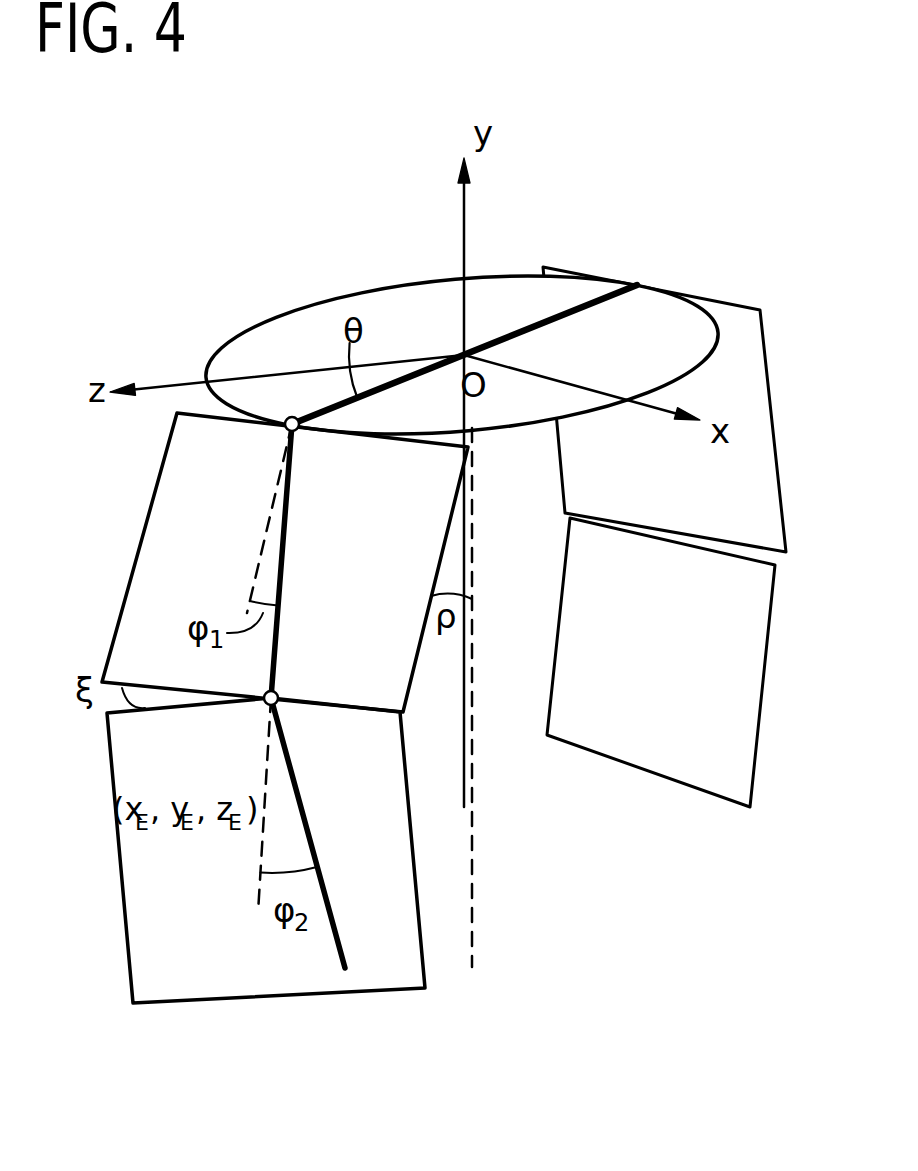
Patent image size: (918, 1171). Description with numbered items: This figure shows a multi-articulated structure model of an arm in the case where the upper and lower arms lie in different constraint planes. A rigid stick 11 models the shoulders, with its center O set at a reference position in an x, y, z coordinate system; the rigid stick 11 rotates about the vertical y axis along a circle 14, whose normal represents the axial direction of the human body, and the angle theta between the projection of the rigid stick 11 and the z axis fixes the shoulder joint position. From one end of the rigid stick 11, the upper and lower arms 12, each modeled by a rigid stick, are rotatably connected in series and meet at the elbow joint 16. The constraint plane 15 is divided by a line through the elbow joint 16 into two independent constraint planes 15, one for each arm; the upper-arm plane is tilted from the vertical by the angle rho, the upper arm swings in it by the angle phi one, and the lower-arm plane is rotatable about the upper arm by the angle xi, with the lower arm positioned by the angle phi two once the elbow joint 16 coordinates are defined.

The rigid stick 11 is at (540, 318).
The upper and lower arms 12 is at (293, 500).
The circle of rotation 14 is at (350, 294).
The constraint plane 15 is at (70, 920).
The elbow joint 16 is at (254, 707).